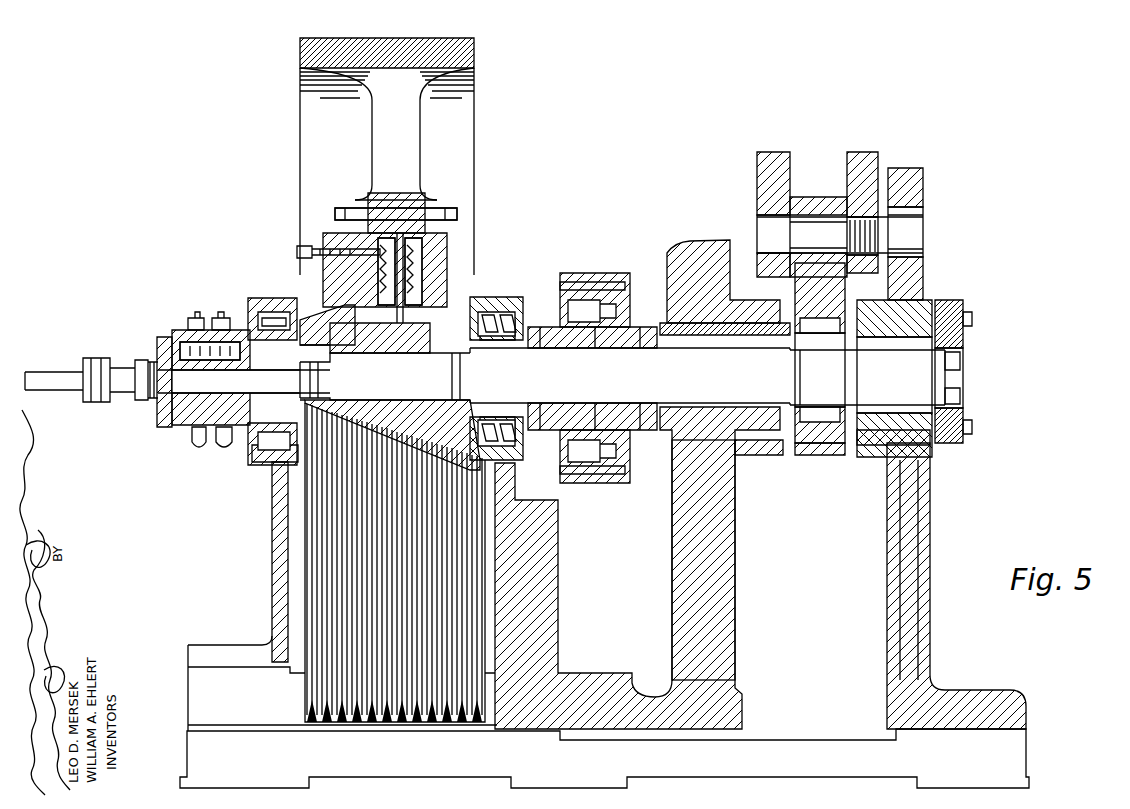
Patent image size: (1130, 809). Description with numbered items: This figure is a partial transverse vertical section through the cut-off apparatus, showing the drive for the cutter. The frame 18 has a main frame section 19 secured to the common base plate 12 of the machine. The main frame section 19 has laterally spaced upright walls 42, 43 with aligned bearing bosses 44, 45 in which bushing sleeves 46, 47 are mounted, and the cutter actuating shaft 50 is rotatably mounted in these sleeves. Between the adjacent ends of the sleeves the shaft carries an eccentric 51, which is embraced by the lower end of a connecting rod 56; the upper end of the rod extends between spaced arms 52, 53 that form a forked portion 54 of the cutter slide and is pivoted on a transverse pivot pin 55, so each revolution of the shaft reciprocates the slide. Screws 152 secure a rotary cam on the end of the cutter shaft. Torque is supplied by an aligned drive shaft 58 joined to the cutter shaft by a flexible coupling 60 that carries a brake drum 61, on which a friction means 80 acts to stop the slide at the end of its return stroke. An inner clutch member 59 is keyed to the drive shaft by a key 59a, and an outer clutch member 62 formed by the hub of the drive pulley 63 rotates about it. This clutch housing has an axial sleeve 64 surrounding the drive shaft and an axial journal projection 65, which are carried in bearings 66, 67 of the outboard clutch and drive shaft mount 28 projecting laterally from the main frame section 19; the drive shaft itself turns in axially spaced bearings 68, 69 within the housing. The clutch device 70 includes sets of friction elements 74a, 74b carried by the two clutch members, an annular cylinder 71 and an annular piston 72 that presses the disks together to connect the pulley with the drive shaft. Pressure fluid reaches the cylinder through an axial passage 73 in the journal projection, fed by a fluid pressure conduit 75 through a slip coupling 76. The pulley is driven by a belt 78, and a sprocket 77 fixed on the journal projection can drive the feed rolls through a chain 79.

The base plate 12 is at (1008, 758).
The frame 18 is at (936, 576).
The main frame section 19 is at (915, 500).
The outboard clutch and drive shaft mount 28 is at (548, 582).
The upright wall 42 is at (917, 538).
The upright wall 43 is at (678, 600).
The bearing boss 44 is at (882, 447).
The bearing boss 45 is at (752, 455).
The bushing sleeve 46 is at (912, 304).
The bushing sleeve 47 is at (712, 330).
The cutter actuating shaft 50 is at (910, 380).
The eccentric 51 is at (818, 455).
The arm 52 is at (875, 166).
The arm 53 is at (823, 151).
The forked portion 54 is at (760, 196).
The transverse pivot pin 55 is at (798, 226).
The connecting rod 56 is at (842, 294).
The drive shaft 58 is at (629, 375).
The inner clutch member 59 is at (418, 350).
The key 59a is at (385, 349).
The flexible coupling 60 is at (626, 326).
The brake drum 61 is at (618, 284).
The outer clutch member 62 is at (420, 272).
The drive pulley 63 is at (476, 62).
The axial sleeve 64 is at (514, 345).
The axial journal projection 65 is at (222, 430).
The bearing 66 is at (530, 306).
The bearing 67 is at (262, 312).
The bearing 68 is at (464, 300).
The bearing 69 is at (390, 387).
The clutch device 70 is at (438, 300).
The annular cylinder 71 is at (330, 258).
The annular piston 72 is at (330, 296).
The axial passage 73 is at (200, 395).
The friction elements 74a is at (428, 286).
The friction elements 74b is at (410, 256).
The fluid pressure conduit 75 is at (74, 374).
The slip coupling 76 is at (104, 358).
The sprocket 77 is at (224, 445).
The belt 78 is at (436, 725).
The chain 79 is at (212, 322).
The friction means 80 is at (589, 274).
The screws 152 is at (940, 362).